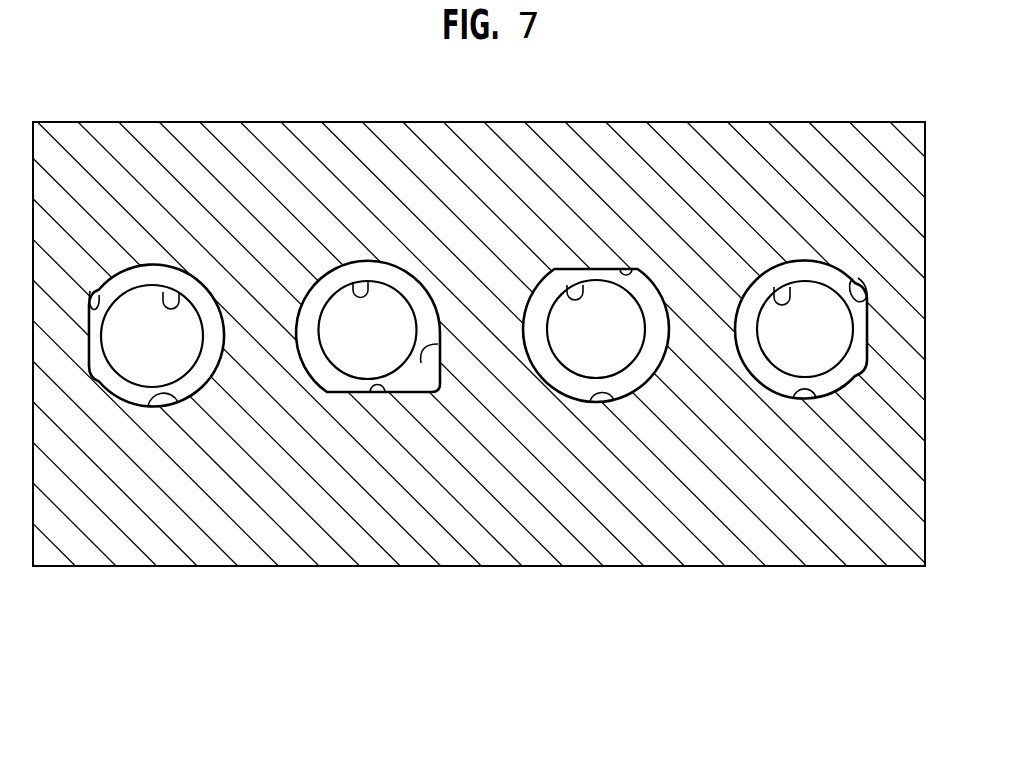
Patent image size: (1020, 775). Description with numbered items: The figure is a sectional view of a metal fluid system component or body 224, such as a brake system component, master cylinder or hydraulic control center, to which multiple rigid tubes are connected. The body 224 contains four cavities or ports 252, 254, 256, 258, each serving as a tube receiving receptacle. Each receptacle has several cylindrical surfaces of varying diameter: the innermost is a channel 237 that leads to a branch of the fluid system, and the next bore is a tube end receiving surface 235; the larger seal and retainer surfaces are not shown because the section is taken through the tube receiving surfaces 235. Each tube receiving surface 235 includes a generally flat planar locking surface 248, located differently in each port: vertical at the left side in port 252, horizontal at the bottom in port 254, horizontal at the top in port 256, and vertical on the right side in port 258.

The fluid system component body 224 is at (231, 574).
The tube end receiving surface 235 is at (178, 402).
The channel 237 is at (179, 293).
The flat planar locking surface 248 is at (90, 292).
The port 252 is at (125, 350).
The port 254 is at (349, 342).
The port 256 is at (574, 347).
The port 258 is at (782, 342).